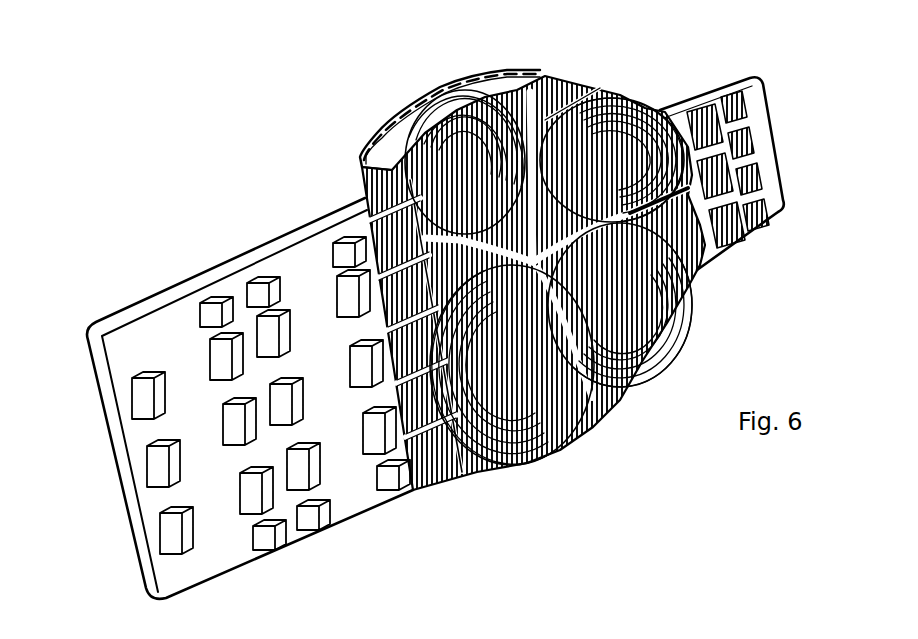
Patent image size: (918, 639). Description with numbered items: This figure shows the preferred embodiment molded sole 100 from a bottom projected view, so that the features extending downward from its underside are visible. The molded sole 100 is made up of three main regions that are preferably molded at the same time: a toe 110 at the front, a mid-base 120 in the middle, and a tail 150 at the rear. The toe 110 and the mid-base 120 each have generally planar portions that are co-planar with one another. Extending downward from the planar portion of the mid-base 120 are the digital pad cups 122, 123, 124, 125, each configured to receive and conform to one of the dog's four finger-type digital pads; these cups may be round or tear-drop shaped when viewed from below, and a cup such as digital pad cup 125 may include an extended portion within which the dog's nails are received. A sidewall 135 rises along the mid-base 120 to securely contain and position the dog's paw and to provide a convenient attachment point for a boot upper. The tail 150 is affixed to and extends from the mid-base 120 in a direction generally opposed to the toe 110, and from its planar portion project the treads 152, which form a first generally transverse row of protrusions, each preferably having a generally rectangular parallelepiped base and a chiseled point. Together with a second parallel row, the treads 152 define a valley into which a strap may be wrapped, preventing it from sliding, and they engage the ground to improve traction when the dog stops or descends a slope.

The molded sole 100 is at (156, 148).
The toe 110 is at (772, 120).
The mid-base 120 is at (528, 66).
The digital pad cup 122 is at (597, 427).
The digital pad cup 123 is at (697, 270).
The digital pad cup 124 is at (633, 105).
The digital pad cup 125 is at (472, 100).
The sidewall 135 is at (360, 157).
The tail 150 is at (122, 476).
The treads 152 is at (412, 488).